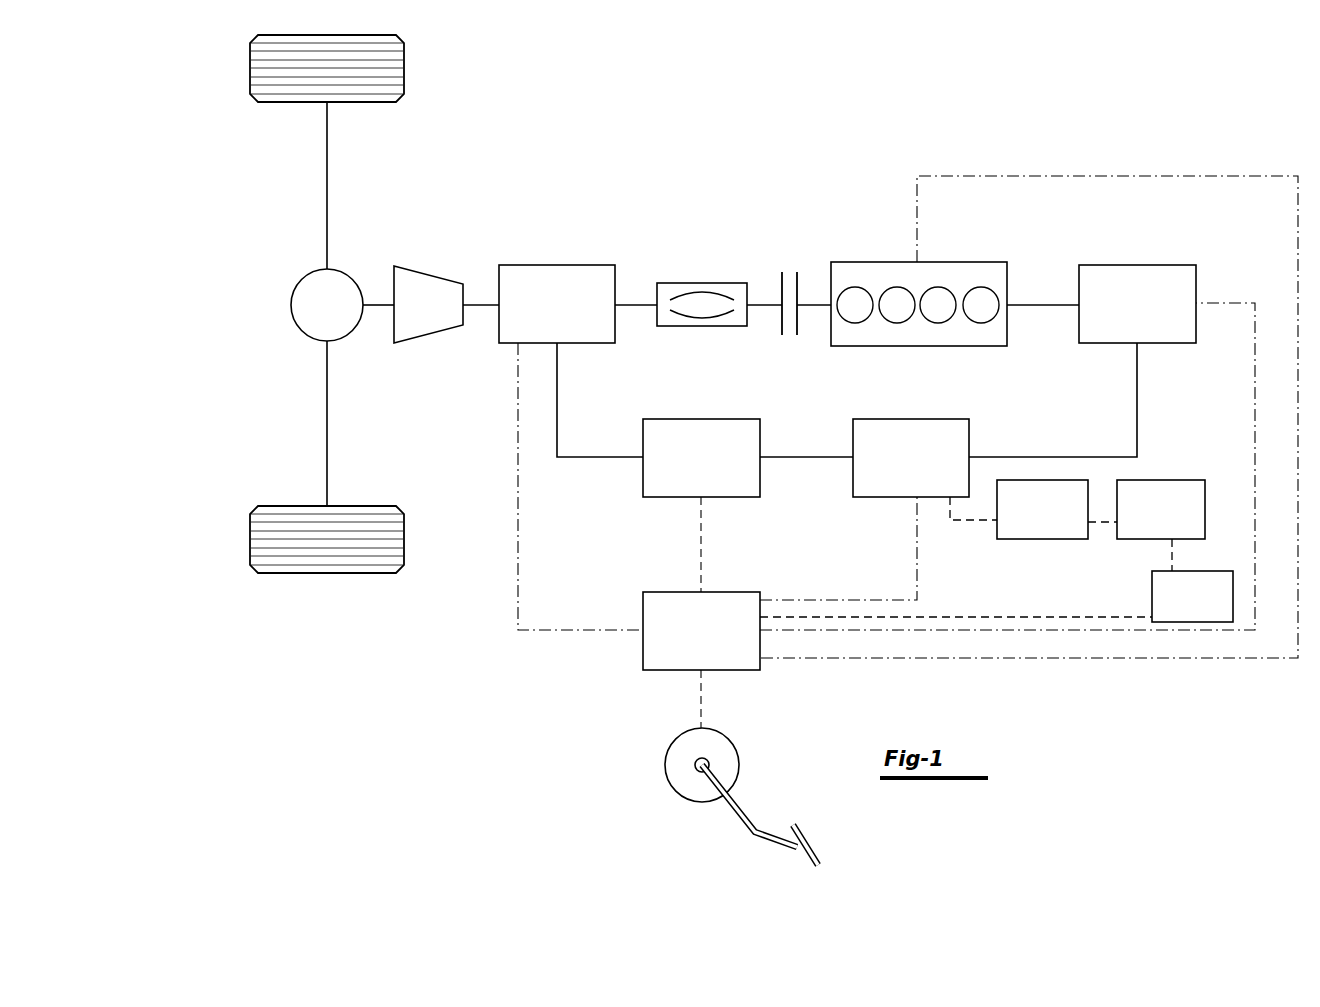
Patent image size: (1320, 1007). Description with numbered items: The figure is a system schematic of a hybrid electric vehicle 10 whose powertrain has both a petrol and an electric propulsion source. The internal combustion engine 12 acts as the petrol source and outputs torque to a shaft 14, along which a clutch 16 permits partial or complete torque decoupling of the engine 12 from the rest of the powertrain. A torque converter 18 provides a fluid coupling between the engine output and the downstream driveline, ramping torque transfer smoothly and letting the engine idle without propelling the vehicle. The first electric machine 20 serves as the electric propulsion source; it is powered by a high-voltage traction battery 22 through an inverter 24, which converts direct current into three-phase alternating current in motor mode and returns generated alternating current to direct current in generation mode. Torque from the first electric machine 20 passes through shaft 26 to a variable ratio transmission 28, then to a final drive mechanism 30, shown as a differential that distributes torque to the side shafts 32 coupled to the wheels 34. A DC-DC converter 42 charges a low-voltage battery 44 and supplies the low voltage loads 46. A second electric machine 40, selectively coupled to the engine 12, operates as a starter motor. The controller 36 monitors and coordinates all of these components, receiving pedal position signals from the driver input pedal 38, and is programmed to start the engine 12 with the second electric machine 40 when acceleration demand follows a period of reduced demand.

The vehicle 10 is at (178, 190).
The internal combustion engine 12 is at (873, 262).
The shaft 14 is at (805, 302).
The clutch 16 is at (782, 325).
The torque converter 18 is at (702, 283).
The first electric machine 20 is at (558, 265).
The high-voltage traction battery 22 is at (911, 419).
The inverter 24 is at (702, 419).
The shaft 26 is at (481, 303).
The variable ratio transmission 28 is at (429, 275).
The final drive mechanism 30 is at (291, 305).
The side shafts 32 is at (327, 186).
The wheels 34 is at (250, 67).
The controller 36 is at (666, 592).
The driver input pedal 38 is at (740, 818).
The second electric machine 40 is at (1137, 265).
The DC-DC converter 42 is at (1055, 539).
The low-voltage battery 44 is at (1185, 480).
The low voltage loads 46 is at (1215, 571).